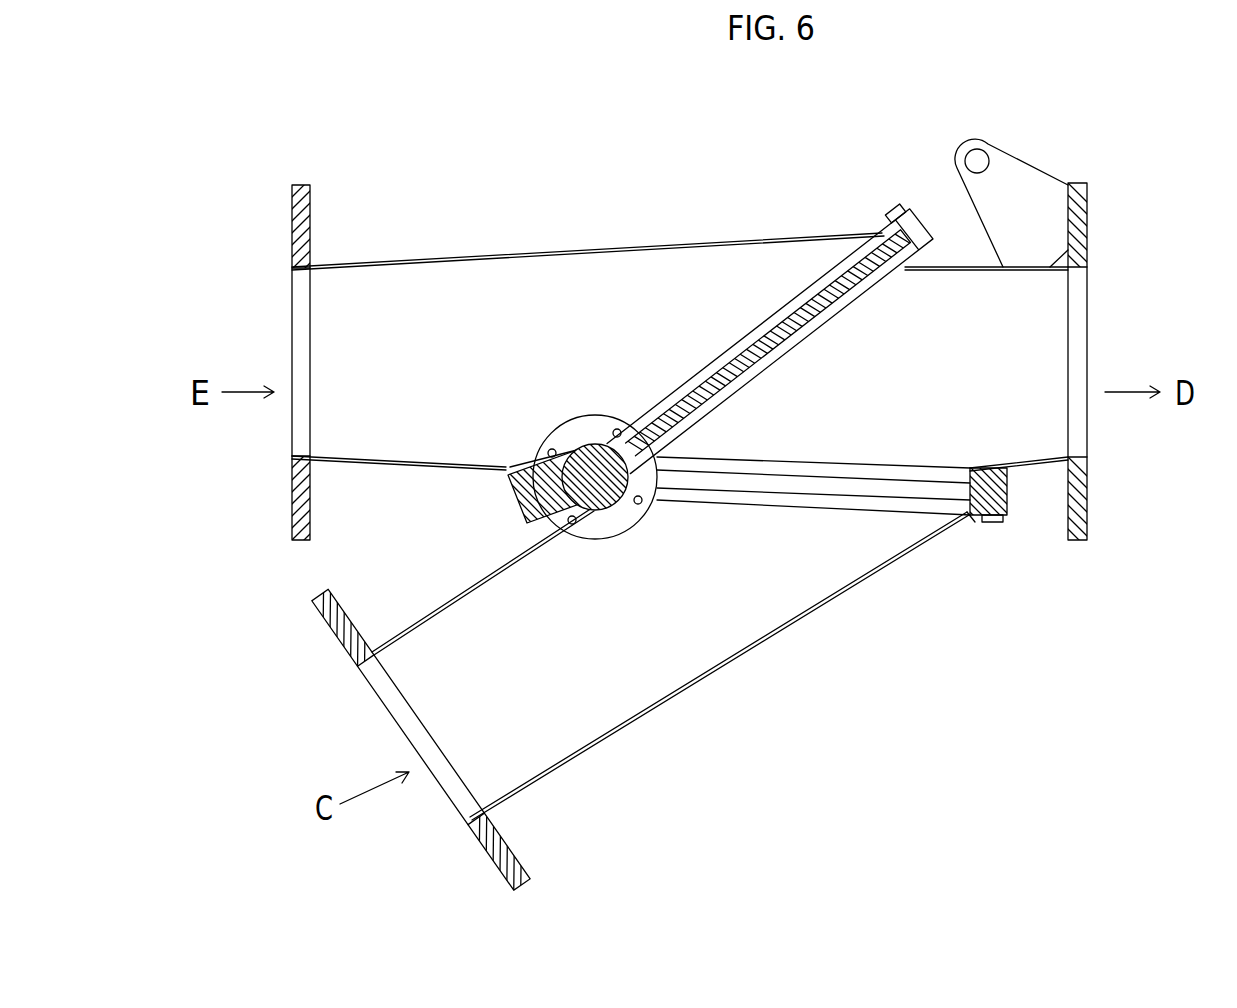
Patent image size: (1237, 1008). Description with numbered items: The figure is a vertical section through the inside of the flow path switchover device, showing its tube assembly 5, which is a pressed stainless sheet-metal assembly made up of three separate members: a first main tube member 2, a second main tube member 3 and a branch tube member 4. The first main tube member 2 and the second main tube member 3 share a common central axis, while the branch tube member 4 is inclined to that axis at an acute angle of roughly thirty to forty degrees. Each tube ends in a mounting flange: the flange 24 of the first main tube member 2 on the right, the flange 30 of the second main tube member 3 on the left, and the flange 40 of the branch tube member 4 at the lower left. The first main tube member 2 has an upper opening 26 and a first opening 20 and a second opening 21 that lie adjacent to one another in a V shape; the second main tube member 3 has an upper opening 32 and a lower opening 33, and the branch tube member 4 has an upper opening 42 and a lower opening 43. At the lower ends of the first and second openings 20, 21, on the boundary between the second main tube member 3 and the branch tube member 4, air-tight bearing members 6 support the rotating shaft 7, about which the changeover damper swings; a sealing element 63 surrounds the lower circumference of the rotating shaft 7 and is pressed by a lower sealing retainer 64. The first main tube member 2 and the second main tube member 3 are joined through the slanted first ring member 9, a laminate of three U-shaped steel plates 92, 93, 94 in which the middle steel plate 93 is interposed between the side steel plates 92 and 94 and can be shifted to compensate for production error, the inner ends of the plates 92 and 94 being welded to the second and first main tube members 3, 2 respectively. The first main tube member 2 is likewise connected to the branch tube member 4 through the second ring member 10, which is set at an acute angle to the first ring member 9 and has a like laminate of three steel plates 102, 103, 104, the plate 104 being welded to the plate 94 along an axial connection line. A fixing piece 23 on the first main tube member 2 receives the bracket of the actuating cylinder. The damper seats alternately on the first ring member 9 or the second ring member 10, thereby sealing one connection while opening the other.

The first main tube member 2 is at (984, 356).
The second main tube member 3 is at (588, 309).
The branch tube member 4 is at (730, 663).
The tube assembly 5 is at (834, 612).
The bearing members 6 is at (577, 532).
The rotating shaft 7 is at (631, 513).
The first ring member 9 is at (774, 346).
The second ring member 10 is at (979, 532).
The first opening 20 is at (900, 288).
The second opening 21 is at (1022, 470).
The fixing piece 23 is at (1042, 183).
The flange 24 is at (1075, 322).
The upper opening 26 is at (1055, 415).
The flange 30 is at (303, 340).
The upper opening 32 is at (797, 265).
The lower opening 33 is at (317, 305).
The flange 40 is at (388, 707).
The upper opening 42 is at (892, 520).
The lower opening 43 is at (468, 778).
The sealing element 63 is at (517, 490).
The lower sealing retainer 64 is at (528, 517).
The side steel plate 92 is at (790, 310).
The middle steel plate 93 is at (895, 272).
The side steel plate 94 is at (805, 330).
The steel plate 102 is at (813, 488).
The steel plate 103 is at (790, 480).
The steel plate 104 is at (700, 460).